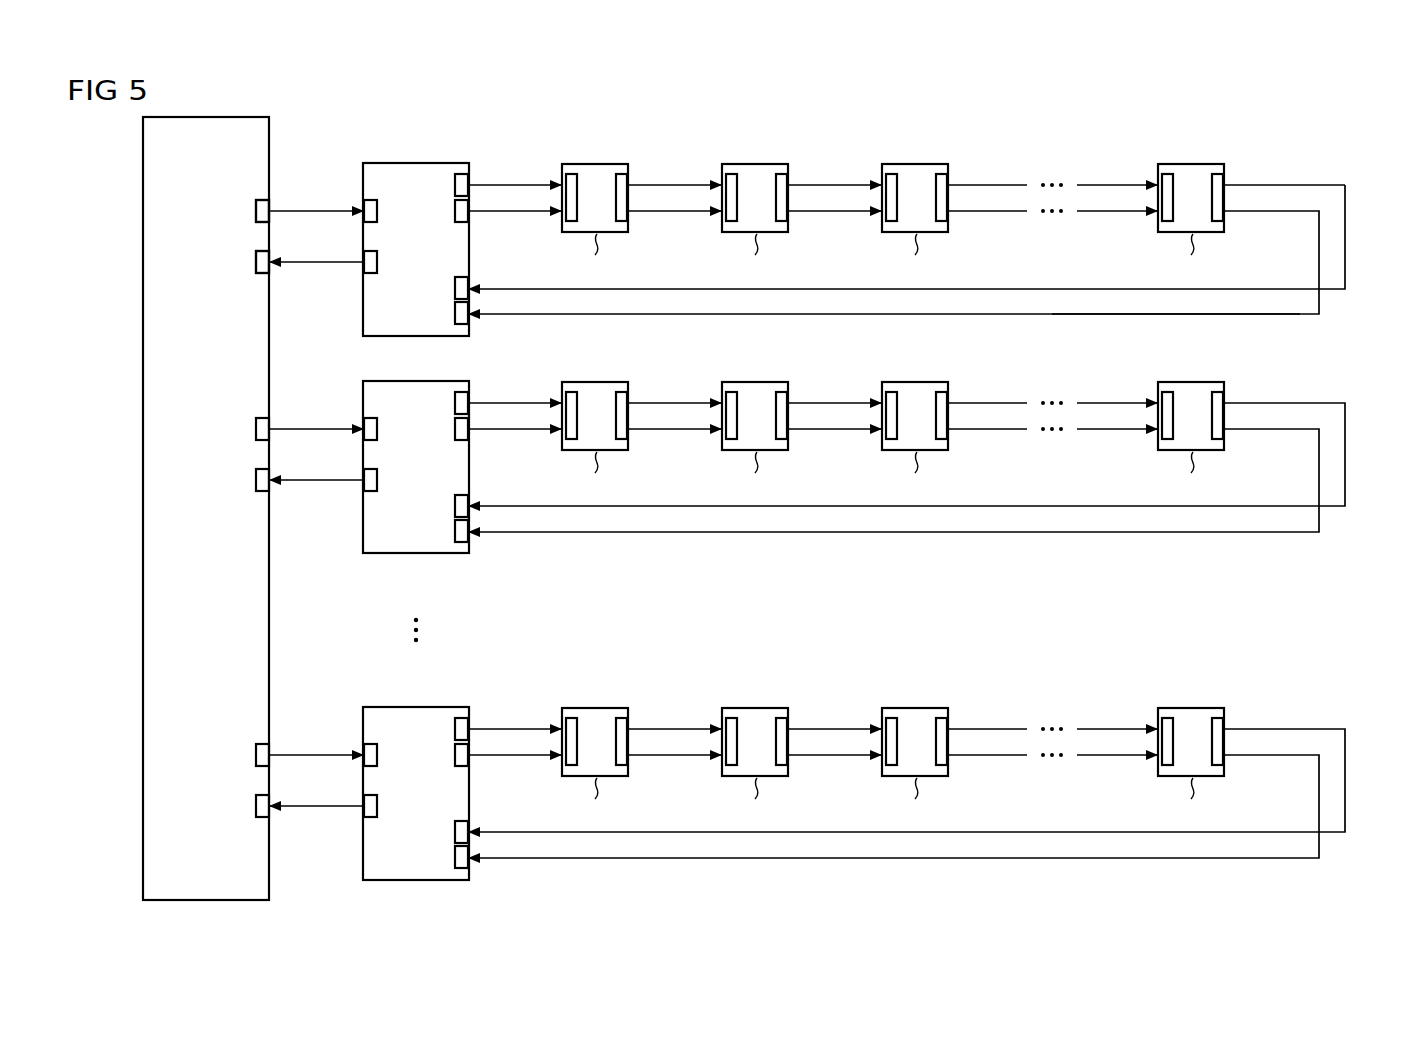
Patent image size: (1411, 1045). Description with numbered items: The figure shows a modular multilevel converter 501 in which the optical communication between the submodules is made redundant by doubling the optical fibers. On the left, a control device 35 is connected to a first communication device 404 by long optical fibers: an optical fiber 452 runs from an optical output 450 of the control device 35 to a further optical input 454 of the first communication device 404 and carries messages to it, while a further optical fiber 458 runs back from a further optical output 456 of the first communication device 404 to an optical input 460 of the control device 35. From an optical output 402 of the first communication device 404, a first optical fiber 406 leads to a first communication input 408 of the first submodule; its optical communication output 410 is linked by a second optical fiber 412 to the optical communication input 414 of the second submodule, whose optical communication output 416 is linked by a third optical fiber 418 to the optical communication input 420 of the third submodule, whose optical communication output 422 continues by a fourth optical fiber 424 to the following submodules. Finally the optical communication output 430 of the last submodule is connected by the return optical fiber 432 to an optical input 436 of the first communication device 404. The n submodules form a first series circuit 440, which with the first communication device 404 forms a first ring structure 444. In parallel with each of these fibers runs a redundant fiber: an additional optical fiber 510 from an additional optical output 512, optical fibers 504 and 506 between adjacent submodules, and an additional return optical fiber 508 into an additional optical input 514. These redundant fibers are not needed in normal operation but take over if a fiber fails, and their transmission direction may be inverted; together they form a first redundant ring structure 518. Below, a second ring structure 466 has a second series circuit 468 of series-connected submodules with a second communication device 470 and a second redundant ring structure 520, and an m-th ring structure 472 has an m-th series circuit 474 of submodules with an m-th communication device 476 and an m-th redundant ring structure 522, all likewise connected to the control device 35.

The control device 35 is at (143, 514).
The first communication device 404 is at (417, 163).
The optical output 402 is at (455, 185).
The additional optical output 512 is at (455, 212).
The optical input 436 is at (455, 287).
The additional optical input 514 is at (455, 313).
The optical output 450 is at (256, 211).
The optical input 460 is at (256, 262).
The optical fiber 452 is at (295, 207).
The further optical input 454 is at (367, 200).
The further optical fiber 458 is at (295, 265).
The further optical output 456 is at (367, 274).
The first optical fiber 406 is at (511, 184).
The additional optical fiber 510 is at (512, 212).
The first communication input 408 is at (571, 176).
The optical communication output 410 is at (622, 176).
The second optical fiber 412 is at (674, 184).
The optical fiber 504 is at (677, 212).
The optical communication input 414 is at (731, 176).
The optical communication output 416 is at (781, 176).
The third optical fiber 418 is at (831, 184).
The optical fiber 506 is at (832, 212).
The optical communication input 420 is at (891, 176).
The optical communication output 422 is at (941, 176).
The fourth optical fiber 424 is at (998, 184).
The optical communication output 430 is at (1218, 176).
The return optical fiber 432 is at (1273, 184).
The first series circuit 440 is at (838, 112).
The modular multilevel converter 501 is at (1316, 131).
The first ring structure 444 is at (1348, 206).
The first redundant ring structure 518 is at (1322, 258).
The additional return optical fiber 508 is at (1052, 316).
The second series circuit 468 is at (838, 359).
The second communication device 470 is at (363, 527).
The second ring structure 466 is at (1347, 424).
The second redundant ring structure 520 is at (1322, 475).
The m-th series circuit 474 is at (838, 678).
The m-th communication device 476 is at (363, 855).
The m-th ring structure 472 is at (1347, 752).
The m-th redundant ring structure 522 is at (1322, 804).